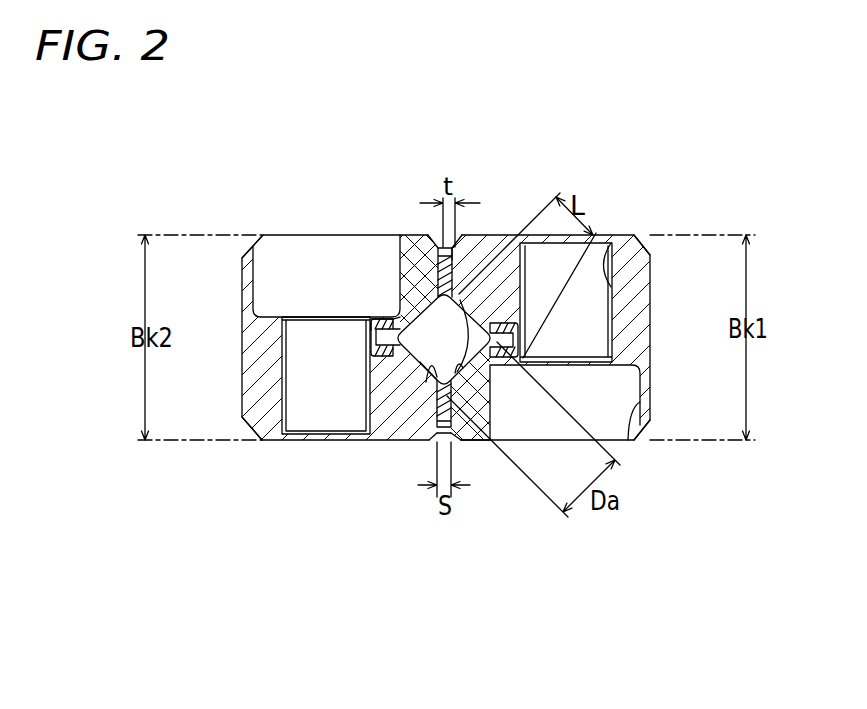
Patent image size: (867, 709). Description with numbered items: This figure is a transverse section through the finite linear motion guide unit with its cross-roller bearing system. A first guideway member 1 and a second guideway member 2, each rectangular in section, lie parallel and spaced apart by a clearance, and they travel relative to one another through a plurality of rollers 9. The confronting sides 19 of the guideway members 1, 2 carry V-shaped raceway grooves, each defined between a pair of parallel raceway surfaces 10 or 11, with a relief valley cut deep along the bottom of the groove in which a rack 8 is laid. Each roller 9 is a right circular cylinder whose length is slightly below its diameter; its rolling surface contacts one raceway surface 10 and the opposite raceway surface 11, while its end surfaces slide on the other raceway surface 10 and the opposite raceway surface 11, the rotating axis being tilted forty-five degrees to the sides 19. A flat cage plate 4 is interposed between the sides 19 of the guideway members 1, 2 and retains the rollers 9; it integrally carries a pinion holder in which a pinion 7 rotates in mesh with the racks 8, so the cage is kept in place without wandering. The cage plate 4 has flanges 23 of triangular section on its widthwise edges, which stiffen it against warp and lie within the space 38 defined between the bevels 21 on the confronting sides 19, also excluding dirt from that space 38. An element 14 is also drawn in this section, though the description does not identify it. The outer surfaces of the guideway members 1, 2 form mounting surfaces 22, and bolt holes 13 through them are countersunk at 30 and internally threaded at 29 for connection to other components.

The first guideway member 1 is at (638, 348).
The second guideway member 2 is at (263, 335).
The cage plate 4 is at (470, 255).
The pinion 7 is at (390, 316).
The rack 8 is at (373, 323).
The roller 9 is at (467, 343).
The raceway surface 10 is at (490, 365).
The raceway surface 11 is at (428, 368).
The bolt hole 13 is at (603, 243).
The plug 14 is at (452, 440).
The side 19 is at (378, 318).
The bevel 21 is at (431, 241).
The mounting surface 22 is at (620, 238).
The flange 23 is at (466, 242).
The threaded hole 29 is at (612, 243).
The countersink 30 is at (636, 440).
The space 38 is at (440, 256).